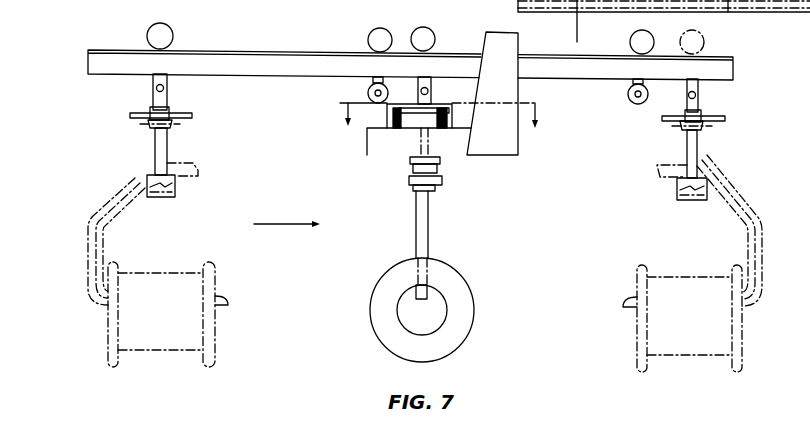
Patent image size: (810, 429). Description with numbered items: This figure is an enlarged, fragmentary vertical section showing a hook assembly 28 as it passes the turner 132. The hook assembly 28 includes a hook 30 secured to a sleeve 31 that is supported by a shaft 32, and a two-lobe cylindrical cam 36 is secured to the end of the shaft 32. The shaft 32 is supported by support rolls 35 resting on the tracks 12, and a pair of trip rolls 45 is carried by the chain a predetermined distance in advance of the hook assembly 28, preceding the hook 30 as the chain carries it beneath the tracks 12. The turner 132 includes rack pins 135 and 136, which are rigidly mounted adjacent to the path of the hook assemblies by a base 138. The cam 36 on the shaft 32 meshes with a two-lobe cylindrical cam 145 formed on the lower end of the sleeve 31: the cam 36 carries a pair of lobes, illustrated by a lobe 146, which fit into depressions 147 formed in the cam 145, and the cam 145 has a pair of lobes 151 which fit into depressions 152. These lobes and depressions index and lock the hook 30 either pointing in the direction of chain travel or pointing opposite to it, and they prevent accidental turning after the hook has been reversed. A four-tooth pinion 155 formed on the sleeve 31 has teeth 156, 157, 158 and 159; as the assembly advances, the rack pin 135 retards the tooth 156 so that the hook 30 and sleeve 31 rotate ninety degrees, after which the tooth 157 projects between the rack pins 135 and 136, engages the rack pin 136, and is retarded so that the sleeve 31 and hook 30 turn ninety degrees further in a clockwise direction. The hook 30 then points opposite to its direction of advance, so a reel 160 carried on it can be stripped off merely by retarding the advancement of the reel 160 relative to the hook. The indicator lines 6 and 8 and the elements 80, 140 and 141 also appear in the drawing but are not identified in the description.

The view direction line 6 is at (571, 25).
The section line 8 is at (440, 126).
The tracks 12 is at (734, 66).
The hook assembly 28 is at (175, 141).
The hook 30 is at (103, 248).
The sleeve 31 is at (153, 150).
The shaft 32 is at (172, 106).
The support rolls 35 is at (174, 30).
The two-lobe cylindrical cam 36 is at (173, 196).
The trip rolls 45 is at (369, 34).
The upper rail 80 is at (723, 13).
The turner 132 is at (396, 98).
The rack pin 135 is at (396, 112).
The rack pin 136 is at (438, 106).
The base 138 is at (367, 139).
The right flexible tube 140 is at (767, 281).
The rod 141 is at (428, 230).
The two-lobe cylindrical cam 145 is at (198, 163).
The lobe 146 is at (150, 201).
The depressions 147 is at (176, 181).
The lobes 151 is at (147, 188).
The depressions 152 is at (413, 188).
The four-tooth pinion 155 is at (143, 122).
The tooth 156 is at (157, 109).
The tooth 157 is at (187, 116).
The tooth 158 is at (452, 110).
The tooth 159 is at (133, 115).
The reel 160 is at (217, 272).